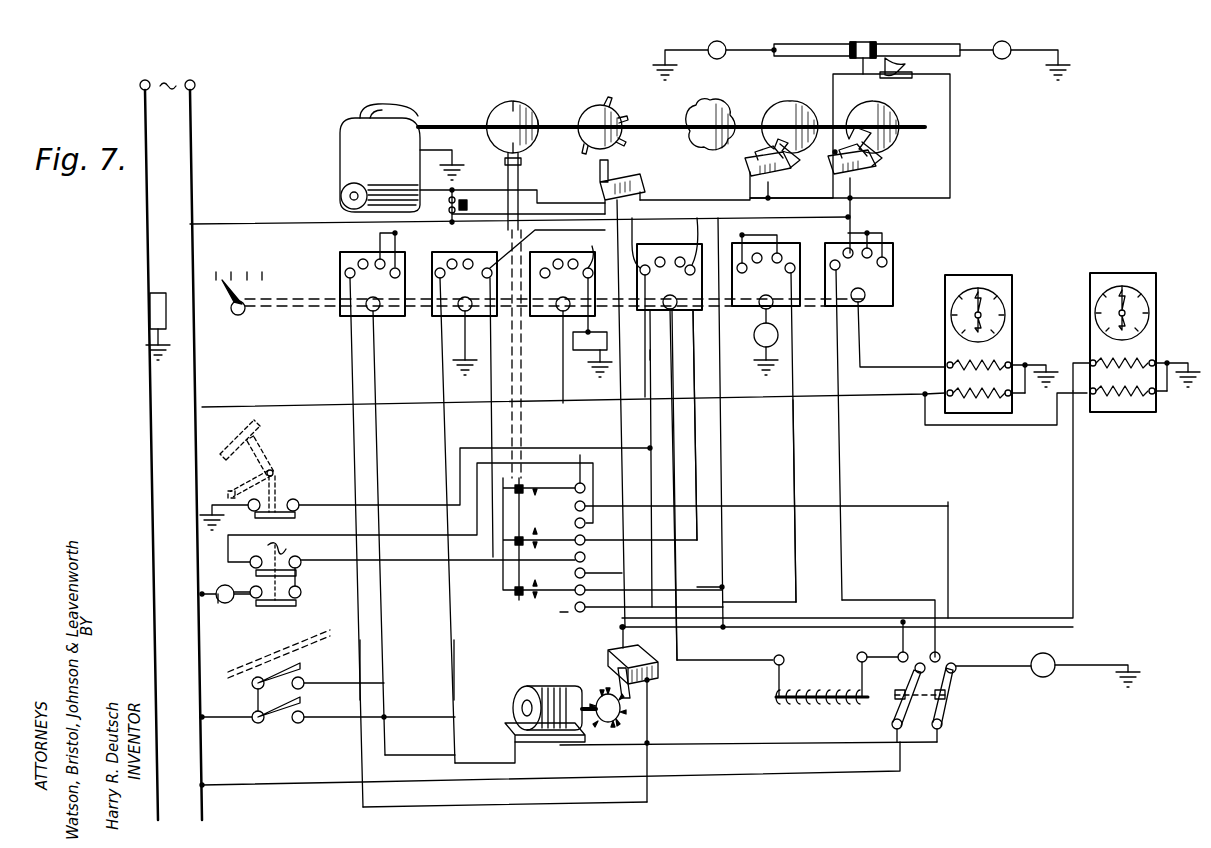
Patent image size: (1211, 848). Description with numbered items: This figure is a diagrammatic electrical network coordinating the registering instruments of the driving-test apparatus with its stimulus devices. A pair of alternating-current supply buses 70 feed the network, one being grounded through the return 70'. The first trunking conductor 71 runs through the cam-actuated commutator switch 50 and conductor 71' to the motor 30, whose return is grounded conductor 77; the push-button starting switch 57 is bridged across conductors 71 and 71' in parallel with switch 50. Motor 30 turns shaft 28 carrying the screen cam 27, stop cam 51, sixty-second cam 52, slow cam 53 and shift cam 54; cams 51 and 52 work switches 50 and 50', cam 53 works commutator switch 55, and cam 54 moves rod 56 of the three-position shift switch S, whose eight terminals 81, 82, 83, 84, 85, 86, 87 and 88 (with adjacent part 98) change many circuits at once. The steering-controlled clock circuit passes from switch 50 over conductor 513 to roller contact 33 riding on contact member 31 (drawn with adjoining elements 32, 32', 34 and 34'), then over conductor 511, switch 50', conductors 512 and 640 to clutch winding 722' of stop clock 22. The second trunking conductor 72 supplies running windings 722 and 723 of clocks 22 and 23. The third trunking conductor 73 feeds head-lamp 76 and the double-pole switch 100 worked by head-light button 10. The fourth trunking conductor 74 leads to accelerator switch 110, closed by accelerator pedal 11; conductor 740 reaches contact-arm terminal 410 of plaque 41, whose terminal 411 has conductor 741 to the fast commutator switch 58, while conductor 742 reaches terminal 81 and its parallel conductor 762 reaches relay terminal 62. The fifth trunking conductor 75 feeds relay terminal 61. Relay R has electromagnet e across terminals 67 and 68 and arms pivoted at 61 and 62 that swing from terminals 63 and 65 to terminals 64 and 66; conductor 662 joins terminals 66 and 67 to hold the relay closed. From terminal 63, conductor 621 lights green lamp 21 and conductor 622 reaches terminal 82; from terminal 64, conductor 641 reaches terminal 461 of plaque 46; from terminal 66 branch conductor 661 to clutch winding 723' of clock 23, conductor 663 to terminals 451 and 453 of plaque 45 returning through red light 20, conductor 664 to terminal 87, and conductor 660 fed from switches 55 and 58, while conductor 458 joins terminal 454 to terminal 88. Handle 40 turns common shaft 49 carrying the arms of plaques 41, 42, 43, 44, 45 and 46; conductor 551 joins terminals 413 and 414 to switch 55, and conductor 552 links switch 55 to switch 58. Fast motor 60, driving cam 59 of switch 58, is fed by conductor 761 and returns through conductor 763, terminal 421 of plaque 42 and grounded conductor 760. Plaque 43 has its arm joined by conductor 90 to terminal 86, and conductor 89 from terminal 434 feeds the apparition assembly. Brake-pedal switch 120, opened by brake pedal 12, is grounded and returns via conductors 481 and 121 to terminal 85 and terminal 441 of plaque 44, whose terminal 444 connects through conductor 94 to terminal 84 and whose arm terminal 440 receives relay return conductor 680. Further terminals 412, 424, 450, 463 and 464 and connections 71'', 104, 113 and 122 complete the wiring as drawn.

The A. C. supply buses 70 is at (182, 450).
The ground return 70' is at (140, 326).
The first trunking conductor 71 is at (519, 209).
The second trunking conductor 72 is at (236, 407).
The third trunking conductor 73 is at (200, 588).
The fourth trunking conductor 74 is at (225, 720).
The fifth trunking conductor 75 is at (216, 785).
The subject's head-lamp 76 is at (220, 606).
The terminal 34 is at (713, 54).
The timer bar 32 is at (811, 40).
The contact member 31 is at (854, 44).
The timer bar 32' is at (918, 40).
The terminal 34' is at (1015, 52).
The roller contact 33 is at (930, 60).
The conductor 511 is at (860, 72).
The conductor 513 is at (950, 170).
The motor 30 is at (340, 148).
The shaft 28 is at (440, 124).
The conductor 77 is at (458, 158).
The conductor 71' is at (512, 186).
The push button switch 57 is at (472, 205).
The shift cam 54 is at (512, 100).
The slow cam 53 is at (595, 104).
The cam 27 is at (722, 100).
The stop cam 51 is at (800, 103).
The sixty second cam 52 is at (890, 112).
The rod 56 is at (522, 173).
The commutator switch 55 is at (640, 175).
The conductor 551 is at (545, 225).
The conductor 552 is at (620, 230).
The conductor 71'' is at (736, 184).
The cam actuated commutator switch 50 is at (783, 165).
The cam actuated commutator switch 50' is at (878, 159).
The conductor 512 is at (852, 214).
The handle 40 is at (233, 312).
The common shaft 49 is at (290, 315).
The plaque 41 is at (361, 284).
The terminal 411 is at (345, 270).
The contact 412 is at (358, 260).
The terminal 413 is at (378, 258).
The terminal 414 is at (400, 268).
The contact arm terminal 410 is at (376, 312).
The plaque 42 is at (455, 284).
The terminal 421 is at (441, 266).
The contact 424 is at (493, 270).
The conductor 760 is at (465, 350).
The plaque 43 is at (562, 293).
The terminal 434 is at (585, 265).
The conductor 89 is at (590, 332).
The conductor 90 is at (563, 372).
The plaque 44 is at (665, 289).
The terminal 441 is at (638, 250).
The terminal 444 is at (698, 245).
The contact arm terminal 440 is at (673, 471).
The conductor 481 is at (648, 352).
The plaque 45 is at (764, 288).
The terminal 451 is at (745, 262).
The terminal 453 is at (780, 252).
The terminal 454 is at (794, 264).
The wiper contact 450 is at (749, 422).
The red signalling light 20 is at (755, 338).
The plaque 46 is at (850, 282).
The contact 463 is at (872, 250).
The contact 464 is at (888, 262).
The terminal 461 is at (832, 268).
The conductor 640 is at (862, 345).
The conductor 641 is at (843, 375).
The electric stop clock 22 is at (978, 333).
The clutch winding 722' is at (1004, 364).
The running winding 722 is at (1005, 412).
The electric stop clock 23 is at (1123, 332).
The clutch winding 723' is at (1136, 362).
The running winding 723 is at (1128, 412).
The conductor 661 is at (1016, 606).
The conductor 622 is at (950, 580).
The braking pedal 12 is at (280, 448).
The switch 120 is at (263, 503).
The conductor 121 is at (404, 505).
The head-light controlling button 10 is at (295, 548).
The switch 100 is at (281, 581).
The conductor 113 is at (425, 530).
The conductor 104 is at (476, 565).
The accelerator pedal 11 is at (305, 635).
The accelerator actuated switch 110 is at (278, 708).
The conductor 741 is at (362, 648).
The conductor 740 is at (386, 674).
The conductor 742 is at (400, 712).
The conductor 763 is at (455, 672).
The conductor 762 is at (415, 754).
The conductor 761 is at (520, 744).
The shift switch S is at (539, 557).
The contact strip 98 is at (565, 615).
The terminal 81 is at (580, 455).
The terminal 82 is at (587, 505).
The conductor 122 is at (700, 500).
The terminal 83 is at (588, 524).
The fourth terminal 84 is at (575, 540).
The fifth terminal 85 is at (575, 558).
The sixth terminal 86 is at (588, 572).
The seventh terminal 87 is at (588, 590).
The conductor 664 is at (698, 587).
The terminal 88 is at (585, 612).
The conductor 94 is at (708, 432).
The conductor 680 is at (700, 460).
The conductor 458 is at (795, 450).
The conductor 663 is at (728, 565).
The conductor 660 is at (688, 627).
The independent commutator switch 58 is at (658, 678).
The cam 59 is at (624, 712).
The fast running motor 60 is at (560, 695).
The relay R is at (804, 694).
The actuating electromagnet e is at (820, 688).
The terminal 68 is at (782, 657).
The terminal 67 is at (858, 654).
The terminal 66 is at (900, 652).
The terminal 65 is at (920, 660).
The terminal 64 is at (940, 652).
The terminal 63 is at (956, 666).
The conductor 662 is at (884, 660).
The terminal 61 is at (890, 724).
The terminal 62 is at (943, 726).
The conductor 621 is at (1000, 668).
The green signalling light 21 is at (1048, 654).